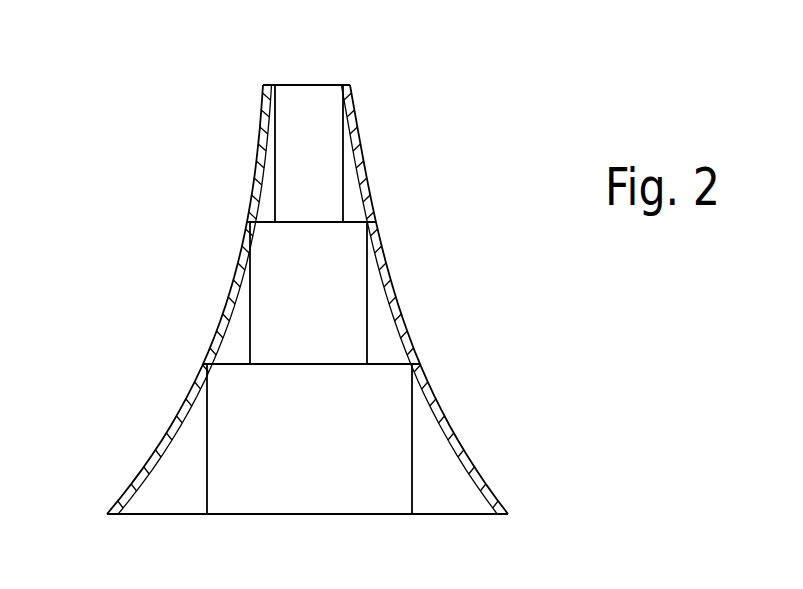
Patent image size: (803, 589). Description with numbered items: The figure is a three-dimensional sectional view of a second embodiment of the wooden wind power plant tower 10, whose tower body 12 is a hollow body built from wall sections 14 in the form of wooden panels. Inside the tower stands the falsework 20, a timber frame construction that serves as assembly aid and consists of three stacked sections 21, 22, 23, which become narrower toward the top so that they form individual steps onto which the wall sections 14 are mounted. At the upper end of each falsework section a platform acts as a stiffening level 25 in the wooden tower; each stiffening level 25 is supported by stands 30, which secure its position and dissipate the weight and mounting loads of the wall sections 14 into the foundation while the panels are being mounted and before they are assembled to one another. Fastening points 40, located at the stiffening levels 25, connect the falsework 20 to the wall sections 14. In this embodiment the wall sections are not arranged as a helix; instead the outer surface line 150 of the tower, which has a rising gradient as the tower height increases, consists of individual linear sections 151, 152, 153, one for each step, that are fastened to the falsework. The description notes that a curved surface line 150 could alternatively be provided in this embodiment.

The tower 10 is at (292, 53).
The tower body 12 is at (450, 413).
The wall sections 14 is at (243, 190).
The falsework 20 is at (300, 576).
The falsework section 21 is at (320, 453).
The falsework section 22 is at (320, 311).
The falsework section 23 is at (320, 172).
The stiffening level 25 is at (320, 87).
The stand 30 is at (270, 163).
The fastening points 40 is at (263, 85).
The surface line 150 is at (413, 327).
The linear section of surface line 151 is at (470, 446).
The linear section of surface line 152 is at (393, 272).
The linear section of surface line 153 is at (365, 170).